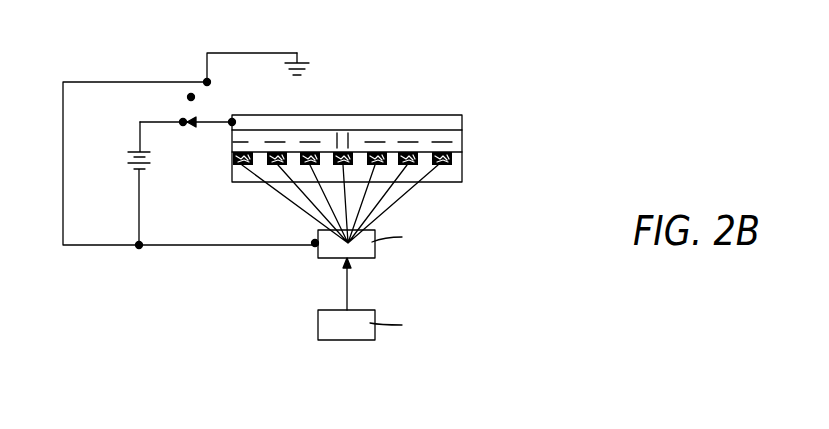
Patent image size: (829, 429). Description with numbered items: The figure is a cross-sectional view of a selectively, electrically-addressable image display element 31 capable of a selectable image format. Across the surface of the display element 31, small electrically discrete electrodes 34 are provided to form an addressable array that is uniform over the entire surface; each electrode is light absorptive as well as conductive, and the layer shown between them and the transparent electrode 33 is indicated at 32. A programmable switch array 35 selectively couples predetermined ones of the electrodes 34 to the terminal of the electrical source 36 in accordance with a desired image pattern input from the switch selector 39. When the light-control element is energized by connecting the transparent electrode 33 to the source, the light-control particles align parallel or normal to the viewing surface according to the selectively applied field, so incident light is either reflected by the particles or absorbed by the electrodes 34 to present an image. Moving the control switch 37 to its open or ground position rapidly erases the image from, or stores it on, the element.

The display element 31 is at (333, 93).
The electrode layer 32 is at (457, 137).
The transparent electrode 33 is at (450, 121).
The electrodes 34 is at (232, 162).
The programmable switch array 35 is at (317, 255).
The electrical source 36 is at (130, 147).
The control switch 37 is at (208, 117).
The switch selector 39 is at (315, 325).